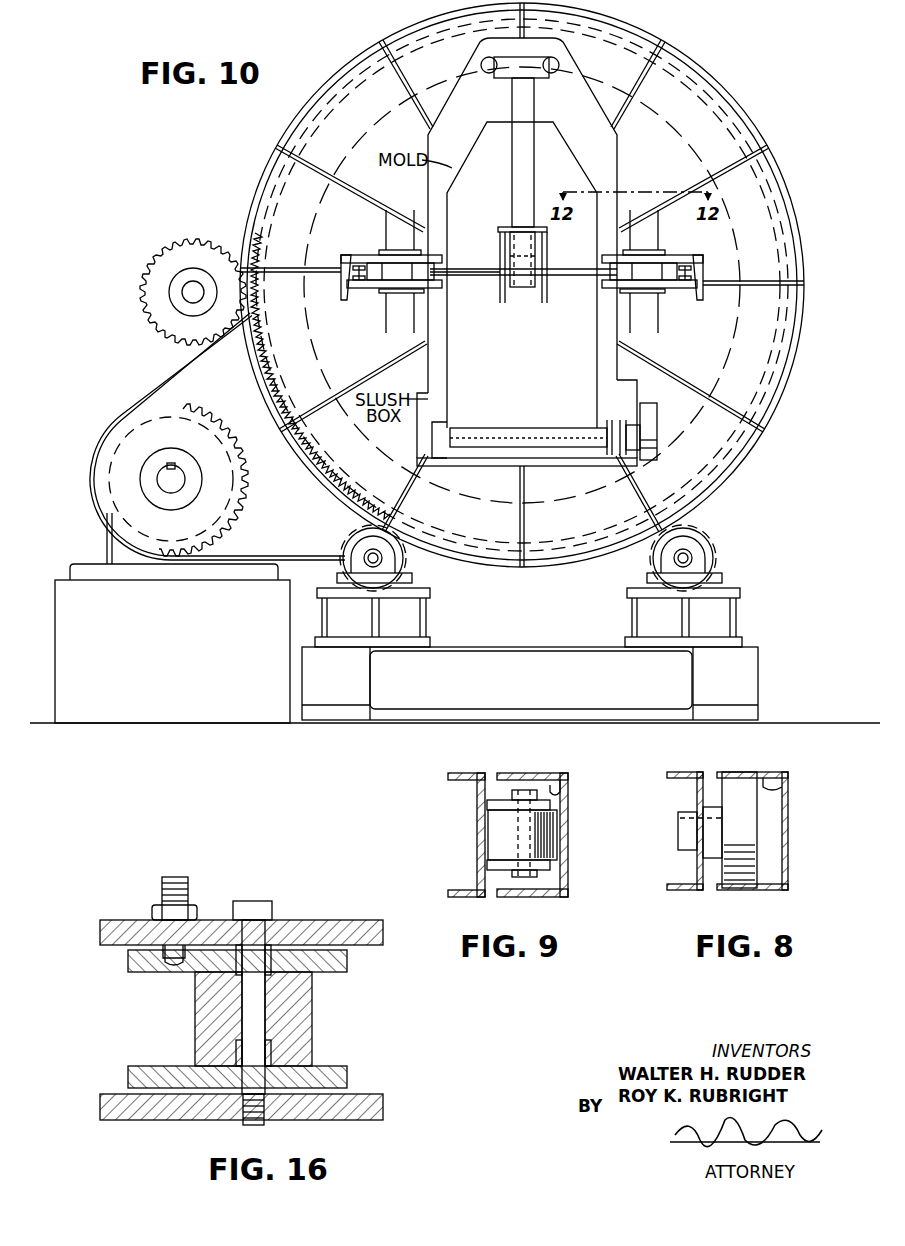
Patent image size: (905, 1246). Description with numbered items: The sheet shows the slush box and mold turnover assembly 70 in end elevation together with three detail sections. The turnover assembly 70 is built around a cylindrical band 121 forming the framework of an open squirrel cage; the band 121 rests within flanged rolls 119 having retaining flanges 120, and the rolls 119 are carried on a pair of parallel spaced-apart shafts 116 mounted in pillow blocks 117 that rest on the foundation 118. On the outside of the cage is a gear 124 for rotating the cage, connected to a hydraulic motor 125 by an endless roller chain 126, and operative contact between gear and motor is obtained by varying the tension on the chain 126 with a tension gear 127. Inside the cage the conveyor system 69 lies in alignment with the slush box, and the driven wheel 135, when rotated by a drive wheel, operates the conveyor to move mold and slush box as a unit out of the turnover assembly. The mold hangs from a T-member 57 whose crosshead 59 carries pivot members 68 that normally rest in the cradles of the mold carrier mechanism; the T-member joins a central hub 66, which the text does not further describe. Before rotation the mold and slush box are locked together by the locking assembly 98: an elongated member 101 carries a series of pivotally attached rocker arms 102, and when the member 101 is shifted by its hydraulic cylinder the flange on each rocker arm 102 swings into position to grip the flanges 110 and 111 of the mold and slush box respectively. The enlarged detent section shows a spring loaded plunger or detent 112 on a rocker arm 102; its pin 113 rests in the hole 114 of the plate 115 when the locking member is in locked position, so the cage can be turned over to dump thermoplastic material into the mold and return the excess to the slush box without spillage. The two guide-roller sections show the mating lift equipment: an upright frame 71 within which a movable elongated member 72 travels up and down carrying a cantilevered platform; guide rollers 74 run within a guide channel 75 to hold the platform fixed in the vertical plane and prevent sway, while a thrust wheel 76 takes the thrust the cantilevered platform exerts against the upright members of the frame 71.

In FIG. 10, the cylindrical band 121 is at (697, 62).
In FIG. 10, the turnover assembly 70 is at (687, 459).
In FIG. 10, the pivot members 68 is at (487, 72).
In FIG. 10, the crosshead 59 is at (550, 72).
In FIG. 10, the T-member 57 is at (527, 148).
In FIG. 10, the conveyor system 69 is at (526, 432).
In FIG. 10, the driven wheel 135 is at (646, 404).
In FIG. 10, the hub 66 is at (548, 272).
In FIG. 10, the flange of the mold 110 is at (436, 268).
In FIG. 10, the flange of the slush box 111 is at (442, 282).
In FIG. 10, the plate 115 is at (397, 250).
In FIG. 16, the plate 115 is at (100, 936).
In FIG. 10, the locking assembly 98 is at (374, 256).
In FIG. 10, the elongated member 101 is at (357, 281).
In FIG. 10, the rocker arms 102 is at (377, 289).
In FIG. 16, the rocker arms 102 is at (136, 958).
In FIG. 10, the tension gear 127 is at (156, 264).
In FIG. 10, the hydraulic motor 125 is at (233, 541).
In FIG. 10, the endless roller chain 126 is at (157, 393).
In FIG. 10, the wheel chain sprocket 124 is at (278, 381).
In FIG. 10, the rolls 119 is at (352, 530).
In FIG. 10, the shafts 116 is at (371, 557).
In FIG. 10, the retaining flanges 120 is at (349, 570).
In FIG. 10, the pillow blocks 117 is at (415, 572).
In FIG. 10, the foundation 118 is at (350, 698).
In FIG. 9, the movable elongated member 72 is at (467, 889).
In FIG. 8, the movable elongated member 72 is at (692, 771).
In FIG. 9, the upright frame 71 is at (571, 878).
In FIG. 8, the upright frame 71 is at (793, 840).
In FIG. 9, the guide channel 75 is at (560, 790).
In FIG. 8, the guide channel 75 is at (783, 784).
In FIG. 9, the thrust wheel 76 is at (550, 830).
In FIG. 8, the guide rollers 74 is at (734, 792).
In FIG. 16, the spring loaded plunger or detent 112 is at (172, 878).
In FIG. 16, the pin 113 is at (172, 952).
In FIG. 16, the hole 114 is at (190, 966).